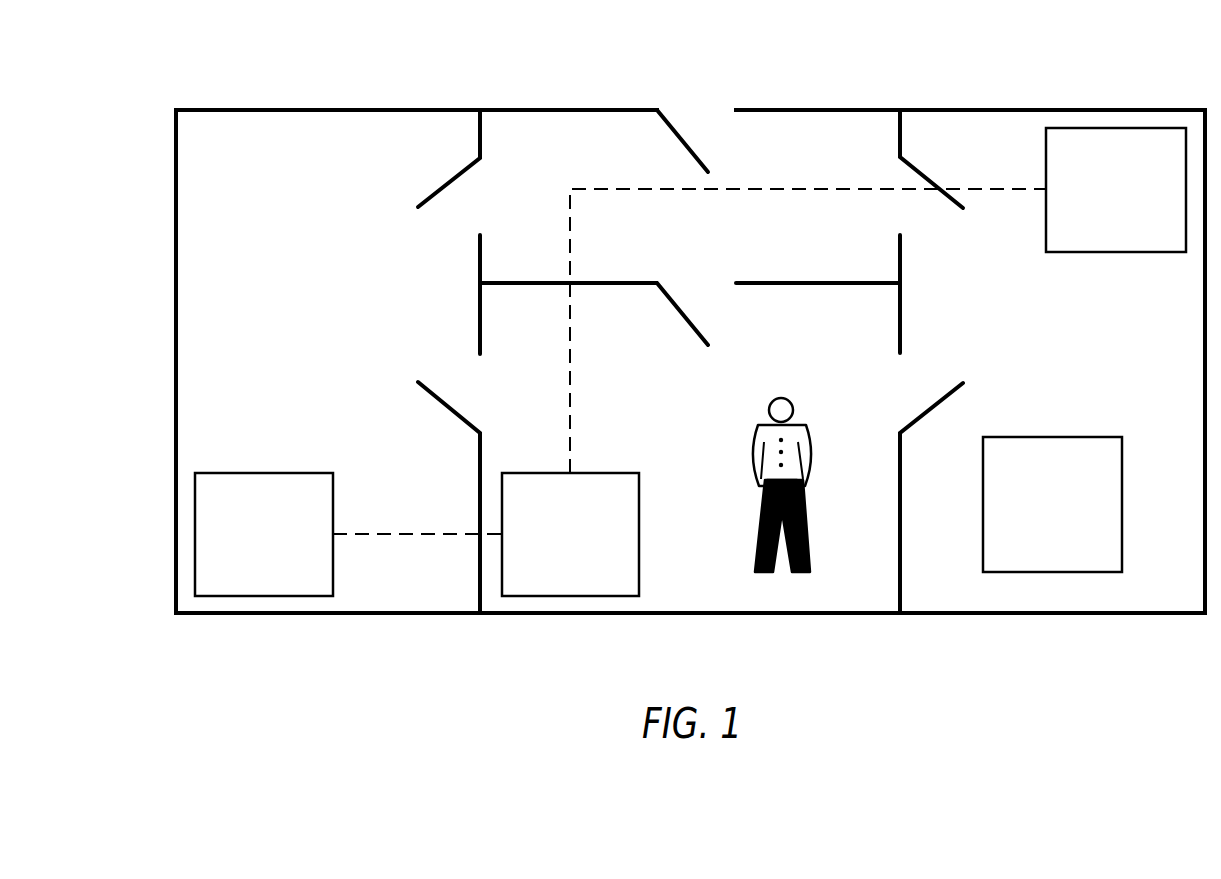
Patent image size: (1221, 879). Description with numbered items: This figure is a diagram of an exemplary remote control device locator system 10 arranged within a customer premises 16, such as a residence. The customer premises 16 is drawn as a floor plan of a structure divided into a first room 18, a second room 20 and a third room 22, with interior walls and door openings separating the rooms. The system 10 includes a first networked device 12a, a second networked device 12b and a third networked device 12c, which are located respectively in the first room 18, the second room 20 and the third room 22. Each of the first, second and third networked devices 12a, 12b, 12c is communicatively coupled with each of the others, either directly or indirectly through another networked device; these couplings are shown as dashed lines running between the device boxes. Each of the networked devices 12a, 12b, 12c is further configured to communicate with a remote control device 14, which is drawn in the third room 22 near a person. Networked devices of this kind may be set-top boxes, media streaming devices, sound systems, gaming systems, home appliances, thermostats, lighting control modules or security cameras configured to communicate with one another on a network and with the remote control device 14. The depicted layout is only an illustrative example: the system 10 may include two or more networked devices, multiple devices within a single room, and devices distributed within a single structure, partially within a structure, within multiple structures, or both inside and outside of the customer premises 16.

The system 10 is at (690, 362).
The first networked device 12a is at (570, 534).
The second networked device 12b is at (264, 534).
The third networked device 12c is at (1116, 190).
The remote control device 14 is at (1052, 504).
The customer premises 16 is at (329, 82).
The first room 18 is at (698, 426).
The second room 20 is at (333, 355).
The third room 22 is at (1059, 355).